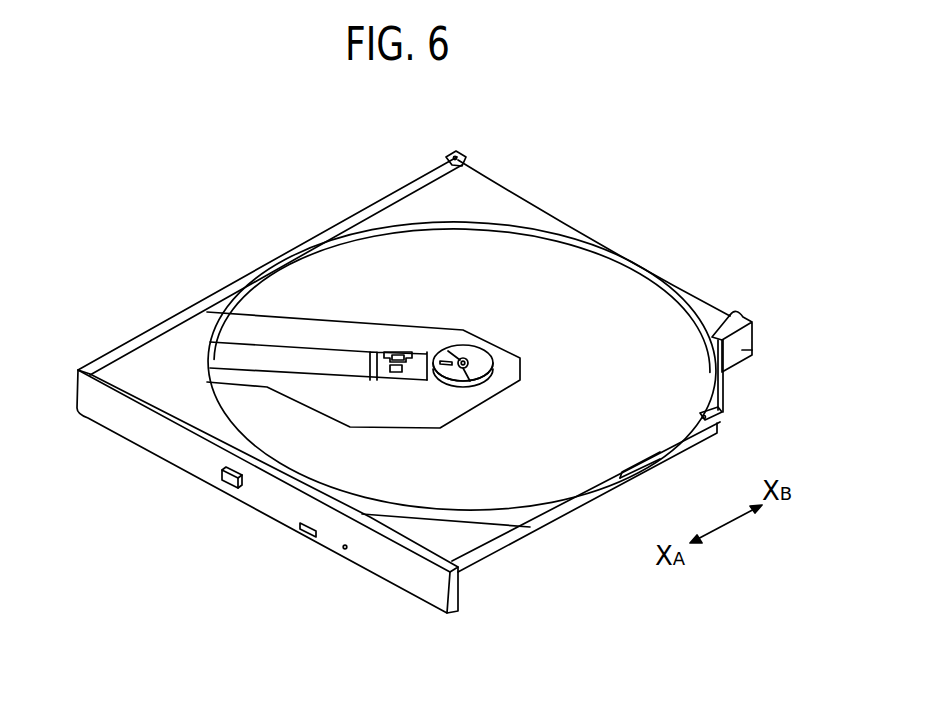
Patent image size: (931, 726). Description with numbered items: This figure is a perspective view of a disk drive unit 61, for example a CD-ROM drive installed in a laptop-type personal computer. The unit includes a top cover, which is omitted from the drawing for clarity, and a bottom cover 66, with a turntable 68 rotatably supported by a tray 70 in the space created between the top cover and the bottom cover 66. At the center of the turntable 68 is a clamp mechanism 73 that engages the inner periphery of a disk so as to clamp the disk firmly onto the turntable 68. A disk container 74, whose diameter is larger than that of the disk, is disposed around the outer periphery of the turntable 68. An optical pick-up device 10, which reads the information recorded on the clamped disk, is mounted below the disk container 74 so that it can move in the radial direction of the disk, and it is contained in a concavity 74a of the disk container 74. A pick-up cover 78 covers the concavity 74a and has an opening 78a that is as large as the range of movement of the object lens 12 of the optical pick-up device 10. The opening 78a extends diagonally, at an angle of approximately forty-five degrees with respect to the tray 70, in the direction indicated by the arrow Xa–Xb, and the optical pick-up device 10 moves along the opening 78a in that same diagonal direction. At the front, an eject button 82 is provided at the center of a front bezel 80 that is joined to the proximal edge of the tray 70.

The disk drive unit 61 is at (577, 167).
The tray 70 is at (530, 550).
The front bezel 80 is at (150, 442).
The eject button 82 is at (227, 478).
The disk container 74 is at (350, 248).
The concavity 74a is at (478, 350).
The clamp mechanism 73 is at (484, 350).
The turntable 68 is at (490, 373).
The pick-up cover 78 is at (365, 327).
The opening 78a is at (317, 360).
The optical pick-up device 10 is at (403, 351).
The object lens 12 is at (390, 368).
The bottom cover 66 is at (745, 350).